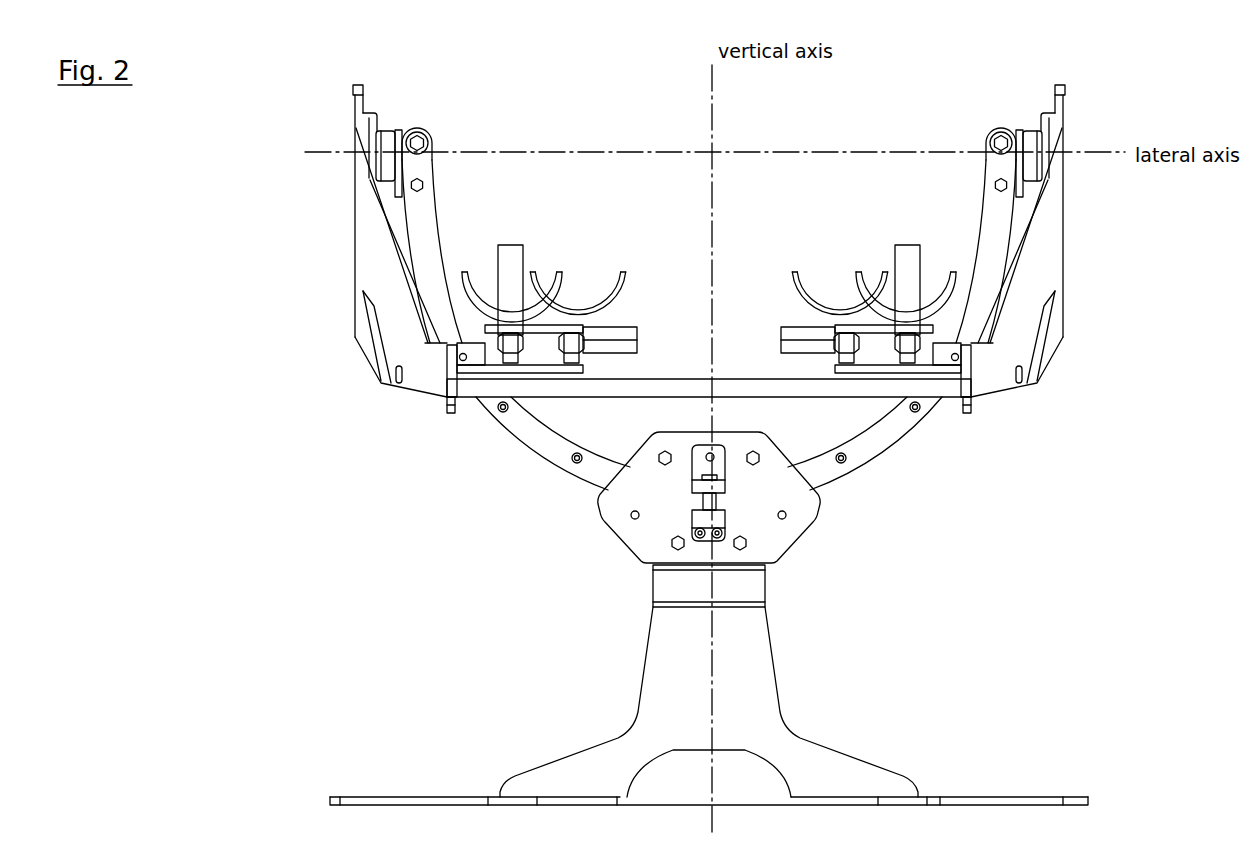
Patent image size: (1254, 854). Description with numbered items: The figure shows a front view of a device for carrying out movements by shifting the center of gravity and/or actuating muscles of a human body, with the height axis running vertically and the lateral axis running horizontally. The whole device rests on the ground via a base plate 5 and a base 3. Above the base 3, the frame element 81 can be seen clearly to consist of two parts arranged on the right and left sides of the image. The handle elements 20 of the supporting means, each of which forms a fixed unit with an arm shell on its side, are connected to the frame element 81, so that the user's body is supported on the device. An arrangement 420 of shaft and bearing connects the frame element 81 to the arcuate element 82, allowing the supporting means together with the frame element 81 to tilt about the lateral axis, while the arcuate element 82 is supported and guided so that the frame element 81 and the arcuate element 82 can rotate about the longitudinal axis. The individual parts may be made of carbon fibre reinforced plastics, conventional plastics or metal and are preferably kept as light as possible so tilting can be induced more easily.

The arrangement of shaft and bearing 420 is at (709, 132).
The handle element 20 is at (709, 292).
The frame element 81 is at (712, 249).
The arcuate element 82 is at (706, 466).
The base 3 is at (709, 614).
The base plate 5 is at (715, 774).